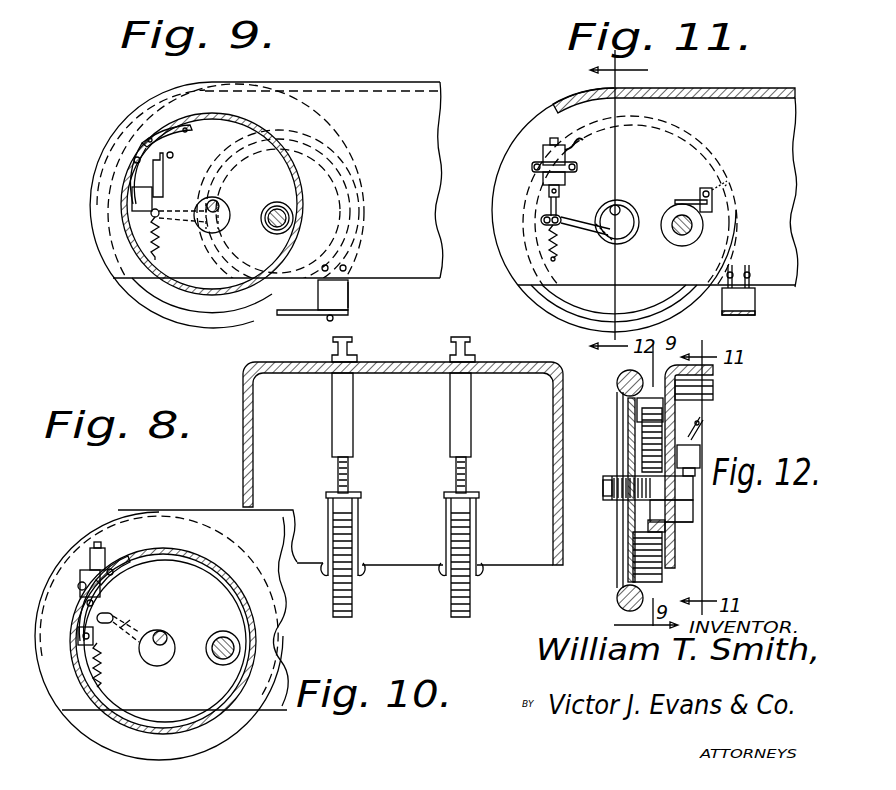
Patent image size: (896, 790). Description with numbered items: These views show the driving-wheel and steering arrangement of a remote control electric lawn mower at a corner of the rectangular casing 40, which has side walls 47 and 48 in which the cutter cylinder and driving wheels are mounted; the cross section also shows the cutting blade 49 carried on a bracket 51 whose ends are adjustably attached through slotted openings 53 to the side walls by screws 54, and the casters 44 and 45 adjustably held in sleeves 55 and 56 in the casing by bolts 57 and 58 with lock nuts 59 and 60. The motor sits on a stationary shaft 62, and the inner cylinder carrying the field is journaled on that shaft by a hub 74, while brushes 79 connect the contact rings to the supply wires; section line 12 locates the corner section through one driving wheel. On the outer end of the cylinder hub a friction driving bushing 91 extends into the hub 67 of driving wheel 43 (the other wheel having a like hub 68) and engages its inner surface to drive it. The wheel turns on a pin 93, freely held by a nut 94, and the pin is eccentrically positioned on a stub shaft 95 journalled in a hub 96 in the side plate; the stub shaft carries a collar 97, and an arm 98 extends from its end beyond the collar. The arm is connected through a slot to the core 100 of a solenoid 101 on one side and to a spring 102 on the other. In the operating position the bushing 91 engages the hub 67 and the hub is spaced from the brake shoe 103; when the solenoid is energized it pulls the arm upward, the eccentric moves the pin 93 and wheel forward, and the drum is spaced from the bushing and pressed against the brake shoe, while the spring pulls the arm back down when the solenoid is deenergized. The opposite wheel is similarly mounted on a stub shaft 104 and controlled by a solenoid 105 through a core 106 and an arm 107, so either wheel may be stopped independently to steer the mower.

In FIG. 11, the section line 12- 12 is at (632, 195).
In FIG. 9, the casing 40 is at (333, 81).
In FIG. 11, the casing 40 is at (770, 88).
In FIG. 10, the casing 40 is at (423, 363).
In FIG. 8, the casing 40 is at (206, 510).
In FIG. 12, the casing 40 is at (712, 384).
In FIG. 9, the driving wheel 43 is at (155, 303).
In FIG. 11, the driving wheel 43 is at (521, 294).
In FIG. 8, the driving wheel 43 is at (238, 726).
In FIG. 12, the driving wheel 43 is at (617, 386).
In FIG. 10, the caster 44 is at (465, 592).
In FIG. 10, the caster 45 is at (347, 592).
In FIG. 9, the side wall 47 is at (386, 100).
In FIG. 8, the side wall 47 is at (140, 530).
In FIG. 11, the side wall 48 is at (547, 112).
In FIG. 12, the side wall 48 is at (689, 558).
In FIG. 9, the cutting blade 49 is at (302, 315).
In FIG. 9, the bracket 51 is at (349, 297).
In FIG. 11, the bracket 51 is at (740, 316).
In FIG. 11, the slotted openings 53 is at (756, 290).
In FIG. 9, the screws 54 is at (348, 268).
In FIG. 11, the screws 54 is at (752, 268).
In FIG. 10, the sleeve 55 is at (471, 408).
In FIG. 10, the sleeve 56 is at (332, 406).
In FIG. 10, the bolt 57 is at (466, 474).
In FIG. 10, the bolt 58 is at (348, 474).
In FIG. 10, the lock nut 59 is at (473, 348).
In FIG. 10, the lock nut 60 is at (350, 352).
In FIG. 9, the stationary shaft 62 is at (272, 212).
In FIG. 11, the stationary shaft 62 is at (676, 233).
In FIG. 8, the stationary shaft 62 is at (209, 667).
In FIG. 9, the hub 67 is at (212, 112).
In FIG. 8, the hub 67 is at (228, 578).
In FIG. 11, the hub 68 is at (590, 300).
In FIG. 12, the hub 68 is at (651, 589).
In FIG. 9, the hub 74 is at (273, 230).
In FIG. 11, the hub 74 is at (698, 229).
In FIG. 8, the hub 74 is at (219, 632).
In FIG. 11, the brushes 79 is at (680, 200).
In FIG. 9, the friction driving bushing 91 is at (292, 219).
In FIG. 8, the friction driving bushing 91 is at (239, 649).
In FIG. 9, the pin 93 is at (212, 204).
In FIG. 11, the pin 93 is at (618, 210).
In FIG. 8, the pin 93 is at (157, 634).
In FIG. 12, the pin 93 is at (603, 488).
In FIG. 12, the nut 94 is at (612, 498).
In FIG. 9, the stub shaft 95 is at (205, 226).
In FIG. 8, the stub shaft 95 is at (162, 664).
In FIG. 12, the stub shaft 95 is at (632, 522).
In FIG. 12, the hub 96 is at (640, 473).
In FIG. 12, the collar 97 is at (668, 520).
In FIG. 8, the arm 98 is at (118, 639).
In FIG. 9, the core 100 is at (157, 173).
In FIG. 9, the solenoid 101 is at (142, 144).
In FIG. 8, the solenoid 101 is at (92, 567).
In FIG. 9, the spring 102 is at (148, 237).
In FIG. 11, the spring 102 is at (549, 251).
In FIG. 8, the spring 102 is at (103, 683).
In FIG. 9, the brake shoe 103 is at (132, 195).
In FIG. 8, the brake shoe 103 is at (118, 565).
In FIG. 12, the brake shoe 103 is at (700, 436).
In FIG. 11, the stub shaft 104 is at (607, 240).
In FIG. 11, the solenoid 105 is at (546, 154).
In FIG. 11, the core 106 is at (549, 193).
In FIG. 11, the arm 107 is at (584, 220).